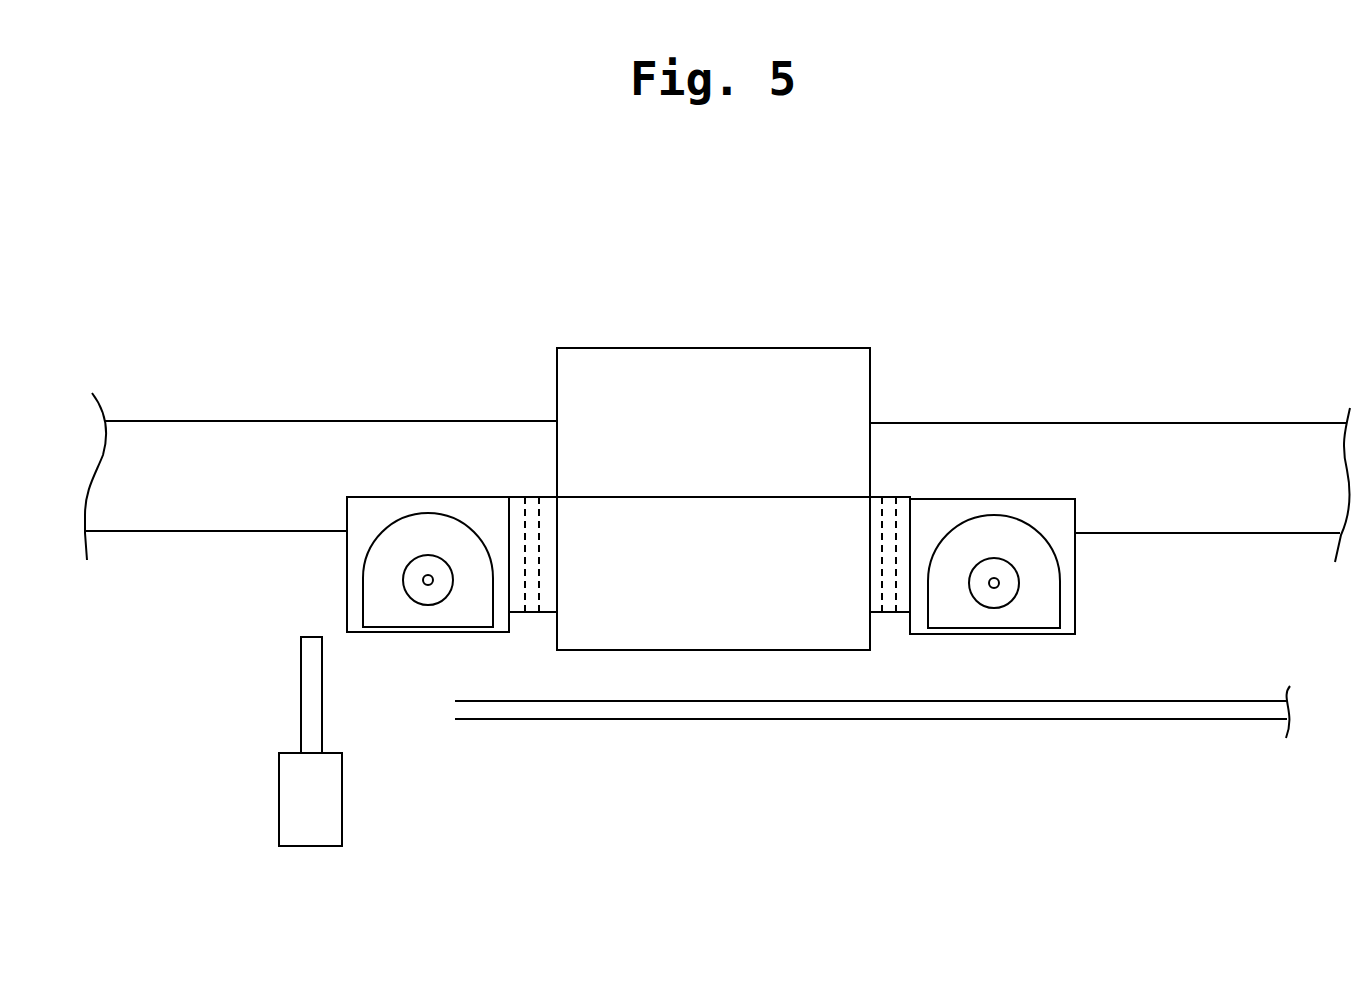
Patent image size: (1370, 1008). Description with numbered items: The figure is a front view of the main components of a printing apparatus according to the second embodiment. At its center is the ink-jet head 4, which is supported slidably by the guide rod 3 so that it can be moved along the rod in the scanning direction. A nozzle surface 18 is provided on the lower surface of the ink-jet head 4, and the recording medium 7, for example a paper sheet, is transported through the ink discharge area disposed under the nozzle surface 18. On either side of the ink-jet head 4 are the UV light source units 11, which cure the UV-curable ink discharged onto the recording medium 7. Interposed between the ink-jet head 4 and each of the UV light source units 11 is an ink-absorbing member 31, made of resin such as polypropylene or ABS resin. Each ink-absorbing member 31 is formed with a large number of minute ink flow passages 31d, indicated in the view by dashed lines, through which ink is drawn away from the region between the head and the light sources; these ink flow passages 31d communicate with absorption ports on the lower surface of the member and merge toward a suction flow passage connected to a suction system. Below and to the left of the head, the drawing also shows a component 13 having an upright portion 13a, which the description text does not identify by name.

The guide rod 3 is at (189, 421).
The ink-jet head 4 is at (690, 348).
The UV light source unit 11 is at (400, 497).
The ink-absorbing member 31 is at (532, 497).
The ink flow passage 31d is at (533, 612).
The nozzle surface 18 is at (722, 650).
The recording medium 7 is at (1183, 712).
The sensor 13 is at (301, 707).
The detection piece 13a is at (313, 647).